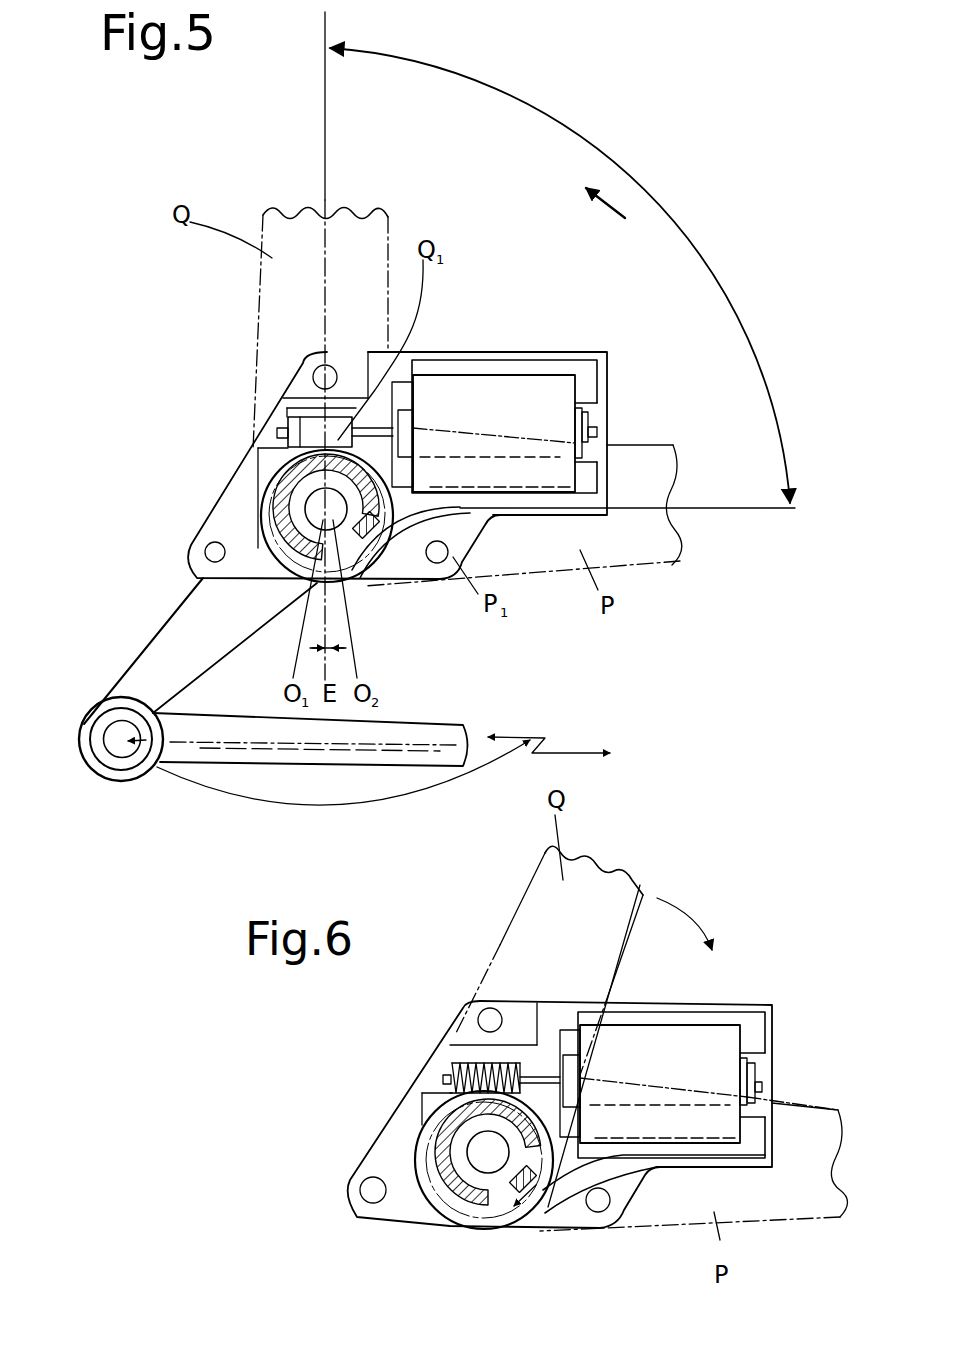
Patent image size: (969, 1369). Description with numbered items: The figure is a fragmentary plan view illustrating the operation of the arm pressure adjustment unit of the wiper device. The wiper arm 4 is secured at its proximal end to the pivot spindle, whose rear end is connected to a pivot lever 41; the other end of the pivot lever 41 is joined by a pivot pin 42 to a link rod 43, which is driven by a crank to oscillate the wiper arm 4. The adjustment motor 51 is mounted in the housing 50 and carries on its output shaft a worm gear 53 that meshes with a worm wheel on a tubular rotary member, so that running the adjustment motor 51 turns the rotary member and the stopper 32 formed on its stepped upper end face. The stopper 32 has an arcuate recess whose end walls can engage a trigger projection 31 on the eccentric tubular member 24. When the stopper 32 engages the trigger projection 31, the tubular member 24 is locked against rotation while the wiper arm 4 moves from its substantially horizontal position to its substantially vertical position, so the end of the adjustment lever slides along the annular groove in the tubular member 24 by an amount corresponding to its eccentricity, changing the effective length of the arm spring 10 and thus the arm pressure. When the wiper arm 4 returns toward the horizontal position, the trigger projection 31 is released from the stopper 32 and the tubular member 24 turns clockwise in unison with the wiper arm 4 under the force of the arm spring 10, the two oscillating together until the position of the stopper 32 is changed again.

In FIG. 5, the wiper arm 4 is at (653, 566).
In FIG. 6, the wiper arm 4 is at (500, 937).
In FIG. 6, the arm spring 10 is at (713, 1010).
In FIG. 5, the eccentric tubular member 24 is at (272, 484).
In FIG. 6, the eccentric tubular member 24 is at (448, 1105).
In FIG. 5, the trigger projection 31 is at (371, 534).
In FIG. 6, the trigger projection 31 is at (537, 1190).
In FIG. 5, the stopper 32 is at (275, 517).
In FIG. 6, the stopper 32 is at (447, 1097).
In FIG. 5, the pivot lever 41 is at (162, 640).
In FIG. 5, the pivot pin 42 is at (112, 741).
In FIG. 5, the link rod 43 is at (300, 748).
In FIG. 5, the housing 50 is at (437, 352).
In FIG. 5, the adjustment motor 51 is at (513, 390).
In FIG. 6, the adjustment motor 51 is at (730, 1047).
In FIG. 5, the worm gear 53 is at (300, 420).